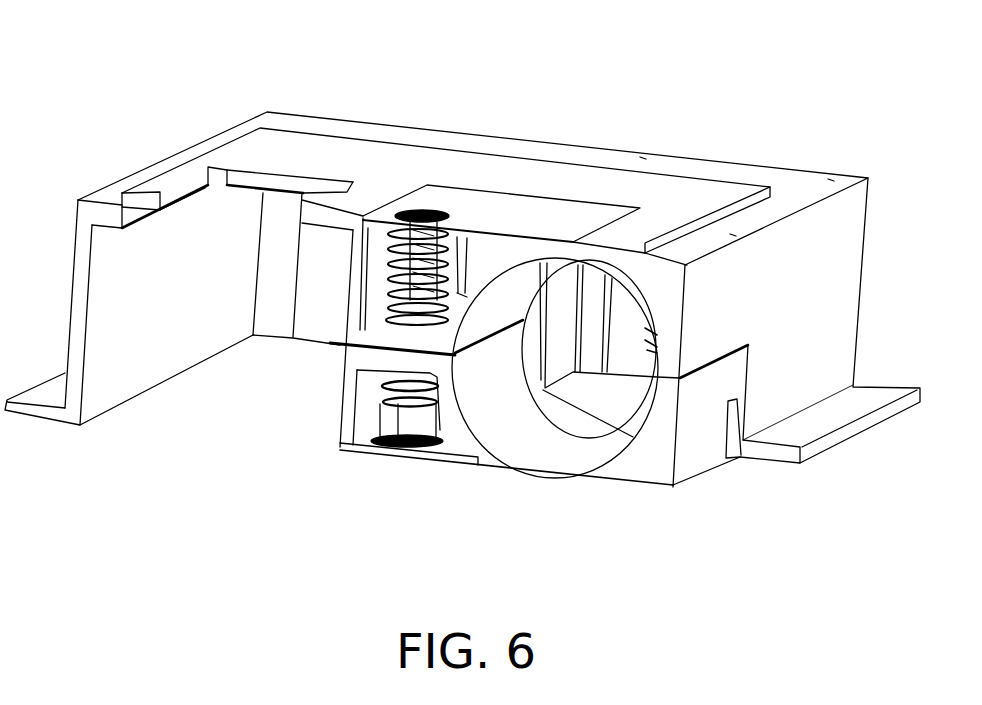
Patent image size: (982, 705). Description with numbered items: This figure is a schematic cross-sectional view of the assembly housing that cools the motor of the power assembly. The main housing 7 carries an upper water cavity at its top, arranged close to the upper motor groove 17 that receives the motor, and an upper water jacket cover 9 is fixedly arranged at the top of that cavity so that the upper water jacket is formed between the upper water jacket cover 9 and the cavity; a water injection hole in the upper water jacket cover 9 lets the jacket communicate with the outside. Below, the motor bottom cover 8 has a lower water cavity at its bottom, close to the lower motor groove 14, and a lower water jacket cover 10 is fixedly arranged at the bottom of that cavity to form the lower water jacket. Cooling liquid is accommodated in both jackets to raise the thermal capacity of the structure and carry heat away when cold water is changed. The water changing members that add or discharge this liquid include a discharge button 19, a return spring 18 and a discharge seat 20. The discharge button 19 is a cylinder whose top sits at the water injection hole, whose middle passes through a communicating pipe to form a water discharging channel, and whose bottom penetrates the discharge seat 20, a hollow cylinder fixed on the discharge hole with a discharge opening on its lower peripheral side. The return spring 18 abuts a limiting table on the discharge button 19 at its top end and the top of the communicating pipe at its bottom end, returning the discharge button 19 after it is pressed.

The main housing 7 is at (507, 145).
The motor bottom cover 8 is at (657, 460).
The upper water jacket cover 9 is at (447, 200).
The lower water jacket cover 10 is at (367, 452).
The lower motor groove 14 is at (551, 443).
The upper motor groove 17 is at (508, 293).
The return spring 18 is at (383, 289).
The discharge button 19 is at (392, 399).
The discharge seat 20 is at (420, 437).